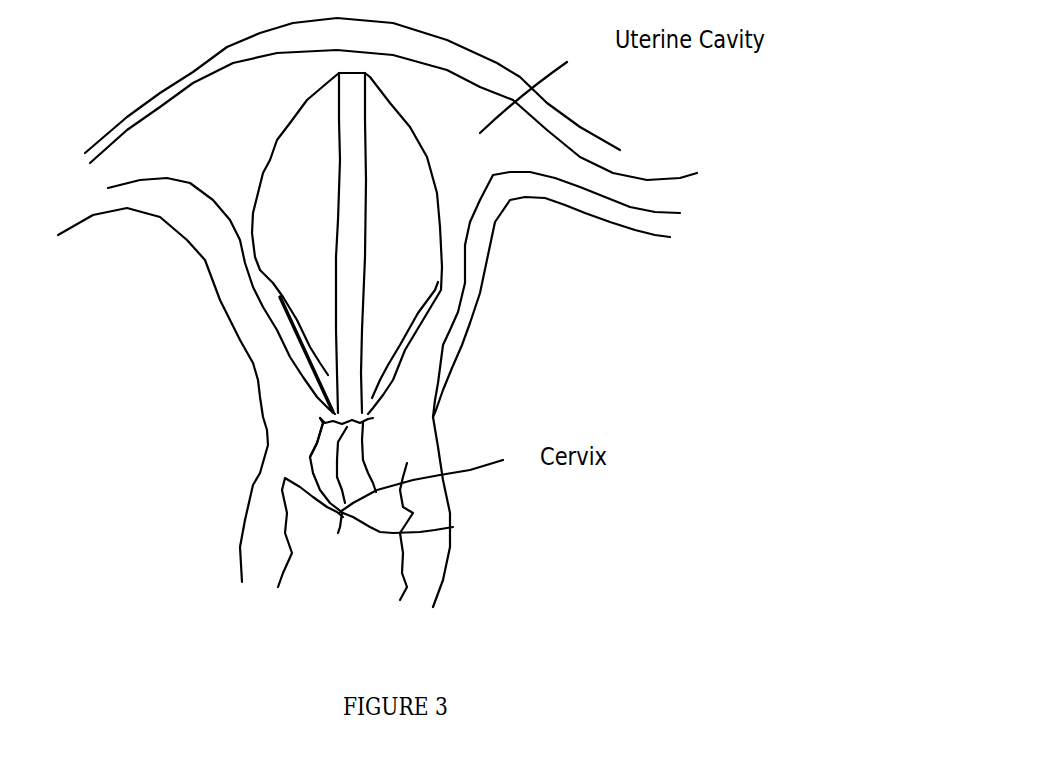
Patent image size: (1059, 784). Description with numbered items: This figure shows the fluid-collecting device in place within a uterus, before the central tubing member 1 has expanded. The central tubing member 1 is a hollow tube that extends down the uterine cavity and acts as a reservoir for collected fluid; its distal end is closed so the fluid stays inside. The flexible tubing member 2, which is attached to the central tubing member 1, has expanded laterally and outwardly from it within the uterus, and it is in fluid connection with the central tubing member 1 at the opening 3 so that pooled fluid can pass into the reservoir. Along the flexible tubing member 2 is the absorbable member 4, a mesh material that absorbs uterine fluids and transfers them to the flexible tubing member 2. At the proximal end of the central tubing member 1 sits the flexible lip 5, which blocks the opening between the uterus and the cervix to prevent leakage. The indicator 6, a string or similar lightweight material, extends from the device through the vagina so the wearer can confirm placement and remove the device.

The central tubing member 1 is at (350, 285).
The flexible tubing member 2 is at (449, 340).
The opening 3 is at (243, 423).
The absorbable member 4 is at (413, 243).
The flexible lip 5 is at (415, 403).
The indicator 6 is at (445, 528).